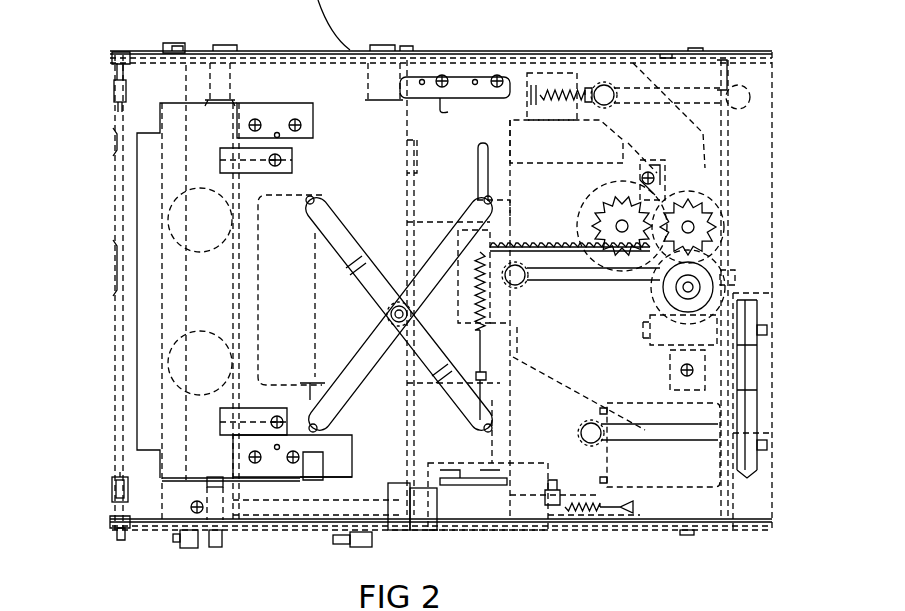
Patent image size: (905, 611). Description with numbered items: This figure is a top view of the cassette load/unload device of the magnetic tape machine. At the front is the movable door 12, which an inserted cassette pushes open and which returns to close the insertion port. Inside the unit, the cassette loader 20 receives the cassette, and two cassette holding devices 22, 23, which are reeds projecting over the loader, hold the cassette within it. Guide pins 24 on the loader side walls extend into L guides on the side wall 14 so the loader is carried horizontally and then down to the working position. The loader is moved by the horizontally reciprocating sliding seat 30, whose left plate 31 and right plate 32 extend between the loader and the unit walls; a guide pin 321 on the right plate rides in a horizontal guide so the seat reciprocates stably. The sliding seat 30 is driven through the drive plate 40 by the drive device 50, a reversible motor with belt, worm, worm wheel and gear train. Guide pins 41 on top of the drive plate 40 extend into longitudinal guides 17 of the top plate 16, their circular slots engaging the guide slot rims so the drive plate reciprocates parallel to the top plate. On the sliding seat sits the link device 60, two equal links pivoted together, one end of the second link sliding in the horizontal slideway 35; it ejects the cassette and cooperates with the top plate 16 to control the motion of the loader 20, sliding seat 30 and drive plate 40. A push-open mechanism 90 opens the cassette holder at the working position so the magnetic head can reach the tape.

The movable door 12 is at (115, 232).
The side wall 14 is at (300, 531).
The top plate 16 is at (741, 146).
The longitudinal guide 17 is at (688, 92).
The cassette loader 20 is at (198, 295).
The cassette holding device 22 is at (225, 160).
The cassette holding device 23 is at (228, 428).
The guide pin 24 is at (215, 78).
The sliding seat 30 is at (433, 190).
The left plate 31 is at (148, 60).
The right plate 32 is at (138, 521).
The horizontal slideway 35 is at (478, 157).
The drive plate 40 is at (548, 257).
The guide pin 41 is at (600, 88).
The drive device 50 is at (738, 272).
The link device 60 is at (352, 338).
The push-open mechanism 90 is at (478, 497).
The guide pin 321 is at (215, 550).